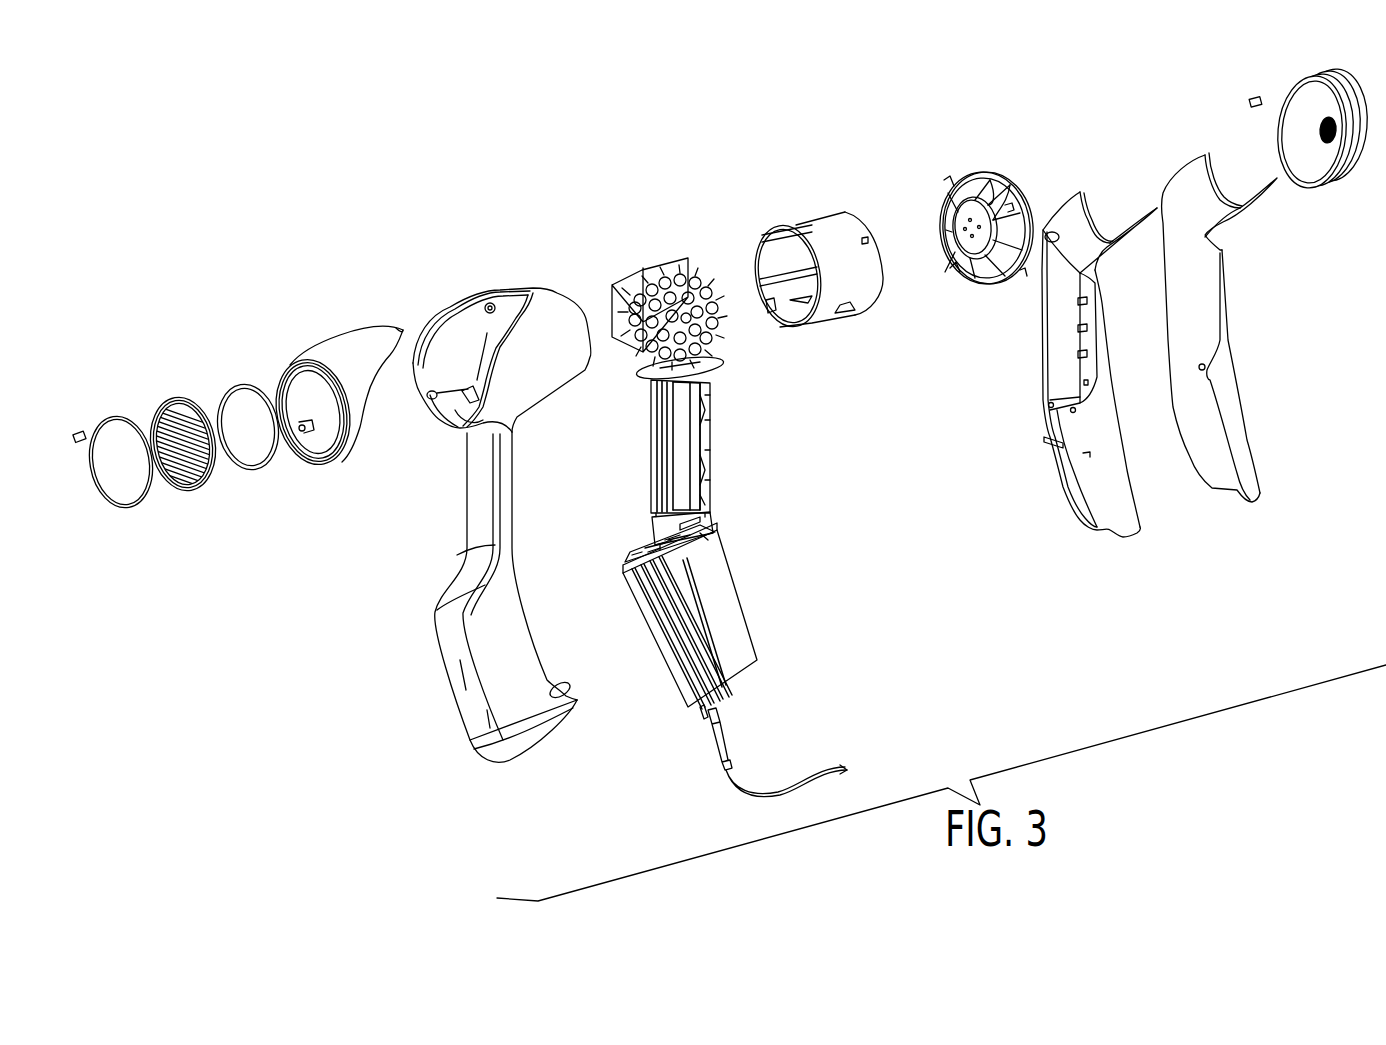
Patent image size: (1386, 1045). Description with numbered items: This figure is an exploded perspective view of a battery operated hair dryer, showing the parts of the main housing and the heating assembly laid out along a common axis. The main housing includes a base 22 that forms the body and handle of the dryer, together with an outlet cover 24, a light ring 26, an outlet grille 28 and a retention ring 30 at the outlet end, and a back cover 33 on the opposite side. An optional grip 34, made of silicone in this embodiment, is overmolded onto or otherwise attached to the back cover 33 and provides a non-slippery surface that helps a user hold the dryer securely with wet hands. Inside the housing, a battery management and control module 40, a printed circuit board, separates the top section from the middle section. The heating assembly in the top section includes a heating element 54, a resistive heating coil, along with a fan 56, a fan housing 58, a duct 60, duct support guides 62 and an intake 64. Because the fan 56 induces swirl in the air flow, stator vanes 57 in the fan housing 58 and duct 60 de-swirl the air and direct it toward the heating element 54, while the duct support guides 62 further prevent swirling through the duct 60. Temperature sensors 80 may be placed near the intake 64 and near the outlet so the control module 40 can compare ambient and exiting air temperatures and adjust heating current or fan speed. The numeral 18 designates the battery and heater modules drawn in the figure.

The heating element and battery modules 18 is at (682, 460).
The base 22 is at (448, 607).
The outlet cover 24 is at (352, 347).
The light ring 26 is at (242, 383).
The outlet grille 28 is at (177, 398).
The retention ring 30 is at (117, 417).
The back cover 33 is at (1137, 527).
The grip 34 is at (1227, 407).
The battery management and control module 40 is at (708, 364).
The heating element 54 is at (707, 263).
The fan 56 is at (998, 205).
The stator vanes 57 is at (947, 192).
The fan housing 58 is at (998, 187).
The duct 60 is at (818, 222).
The duct support guides 62 is at (650, 270).
The intake 64 is at (1368, 170).
The temperature sensors 80 is at (79, 442).